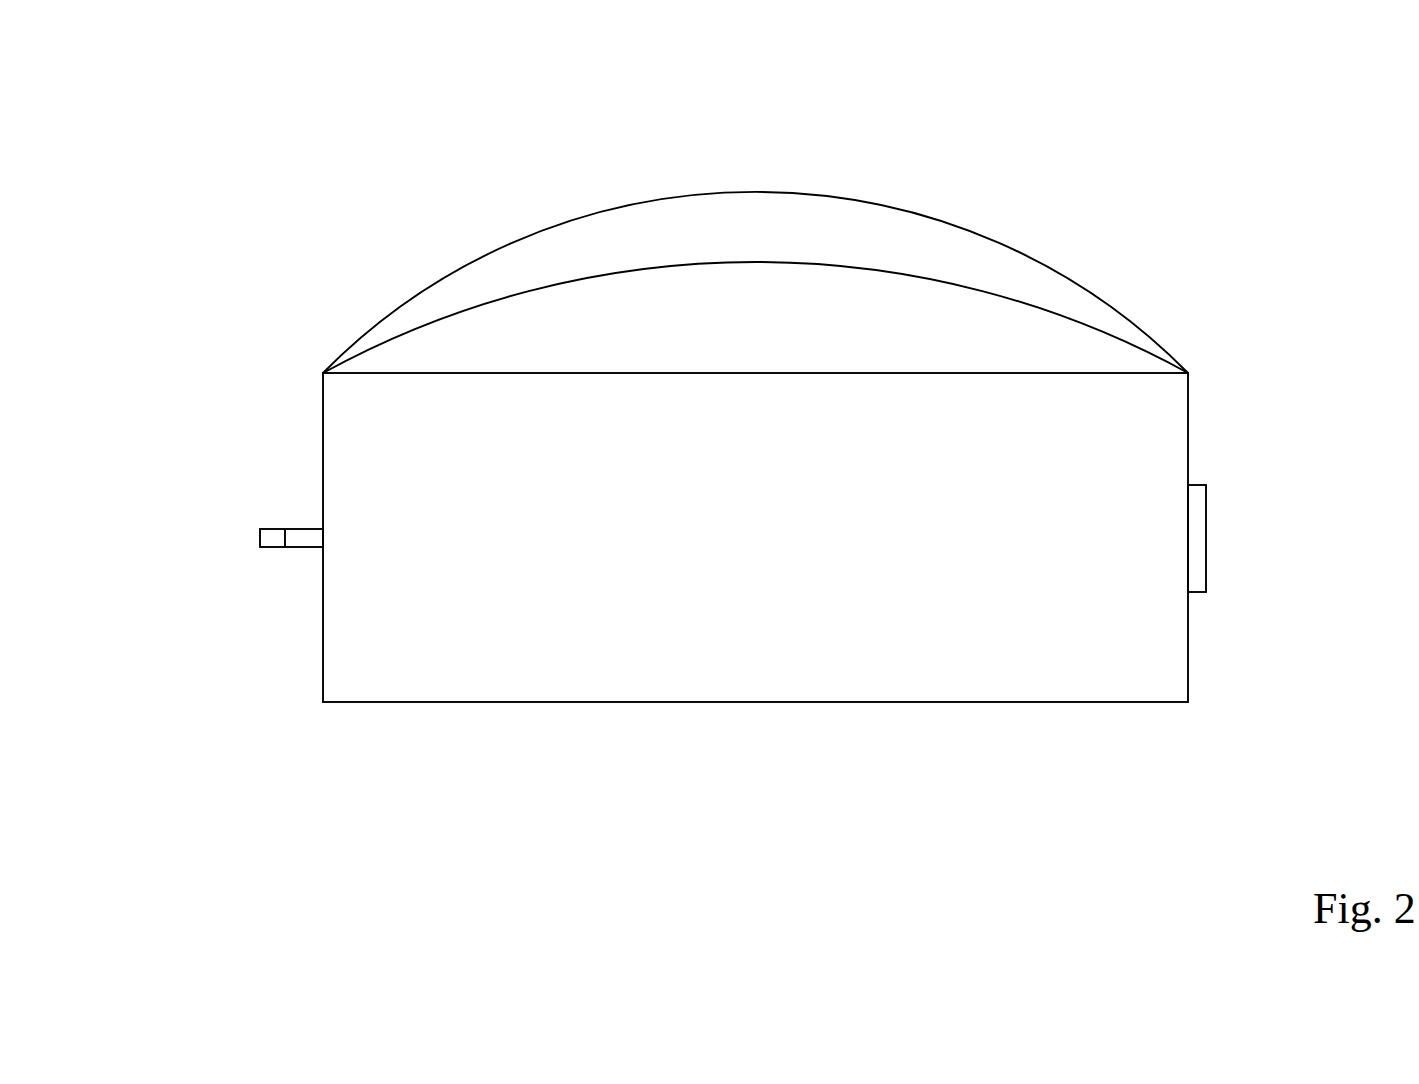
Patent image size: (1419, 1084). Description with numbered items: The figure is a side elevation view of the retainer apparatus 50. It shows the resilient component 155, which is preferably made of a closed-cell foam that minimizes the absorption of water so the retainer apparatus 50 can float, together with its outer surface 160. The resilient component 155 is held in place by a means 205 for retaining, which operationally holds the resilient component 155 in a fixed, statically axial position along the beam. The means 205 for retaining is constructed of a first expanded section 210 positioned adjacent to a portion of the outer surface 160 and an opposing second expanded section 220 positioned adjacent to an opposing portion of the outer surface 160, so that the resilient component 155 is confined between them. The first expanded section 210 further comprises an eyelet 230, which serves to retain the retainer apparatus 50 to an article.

The retainer apparatus 50 is at (734, 390).
The resilient component 155 is at (563, 222).
The outer surface 160 is at (782, 494).
The means for retaining 205 is at (734, 583).
The first expanded section 210 is at (218, 605).
The second expanded section 220 is at (1206, 564).
The eyelet 230 is at (270, 548).